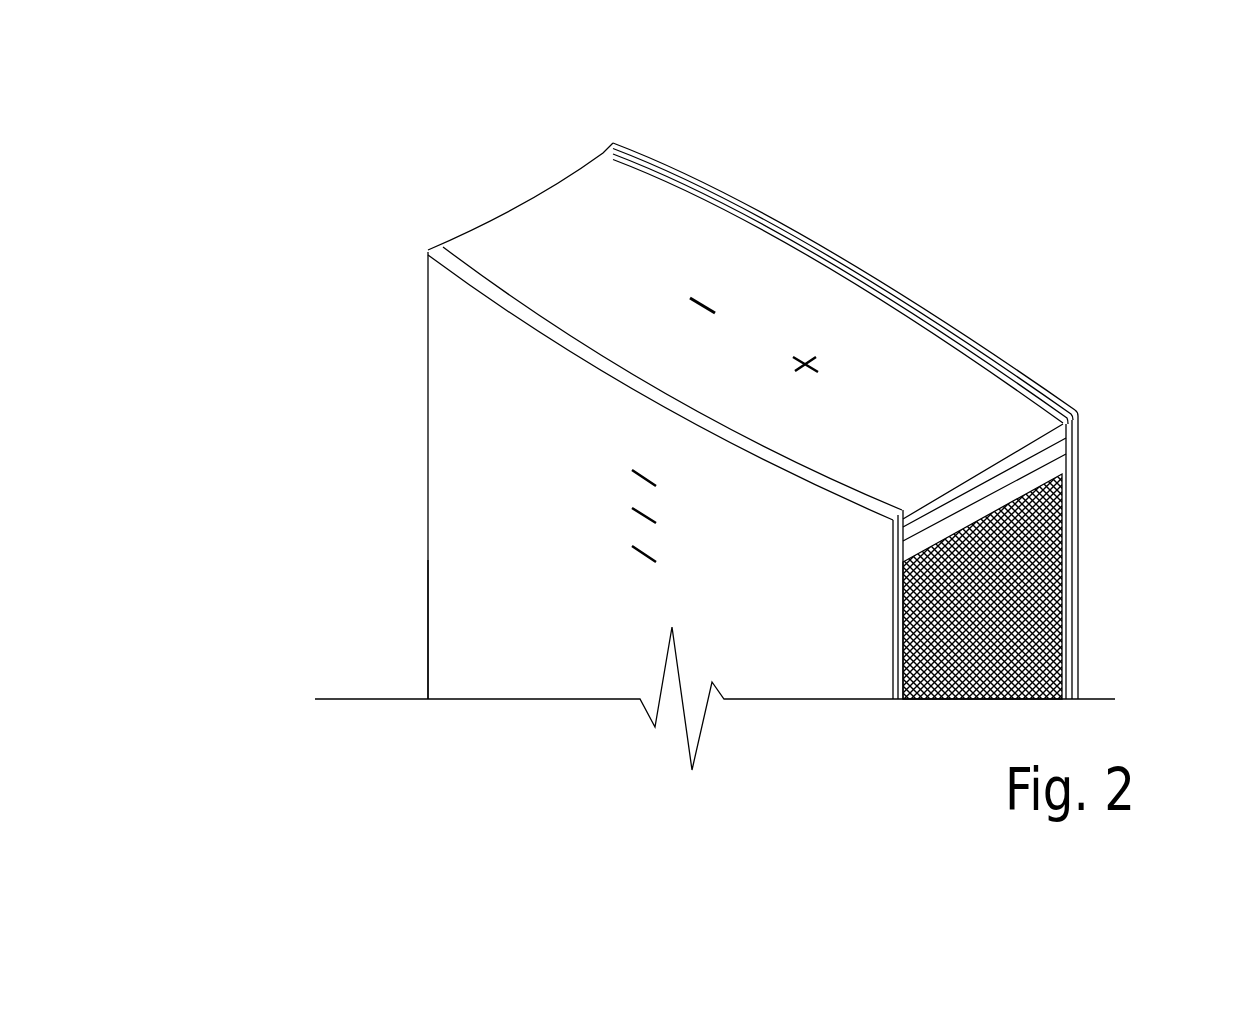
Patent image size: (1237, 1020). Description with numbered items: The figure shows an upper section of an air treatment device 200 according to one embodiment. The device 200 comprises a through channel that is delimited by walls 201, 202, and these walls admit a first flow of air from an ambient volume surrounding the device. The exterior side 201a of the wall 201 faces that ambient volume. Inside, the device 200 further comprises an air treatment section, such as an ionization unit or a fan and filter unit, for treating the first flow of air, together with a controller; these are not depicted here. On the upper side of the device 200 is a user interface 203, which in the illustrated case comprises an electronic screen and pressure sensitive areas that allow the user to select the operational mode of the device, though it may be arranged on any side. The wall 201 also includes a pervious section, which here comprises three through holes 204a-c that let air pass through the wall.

The air treatment device 200 is at (697, 430).
The wall 201 is at (458, 460).
The exterior side of the wall 201a is at (455, 597).
The wall 202 is at (1082, 532).
The user interface 203 is at (808, 320).
The through holes 204a-c is at (680, 526).